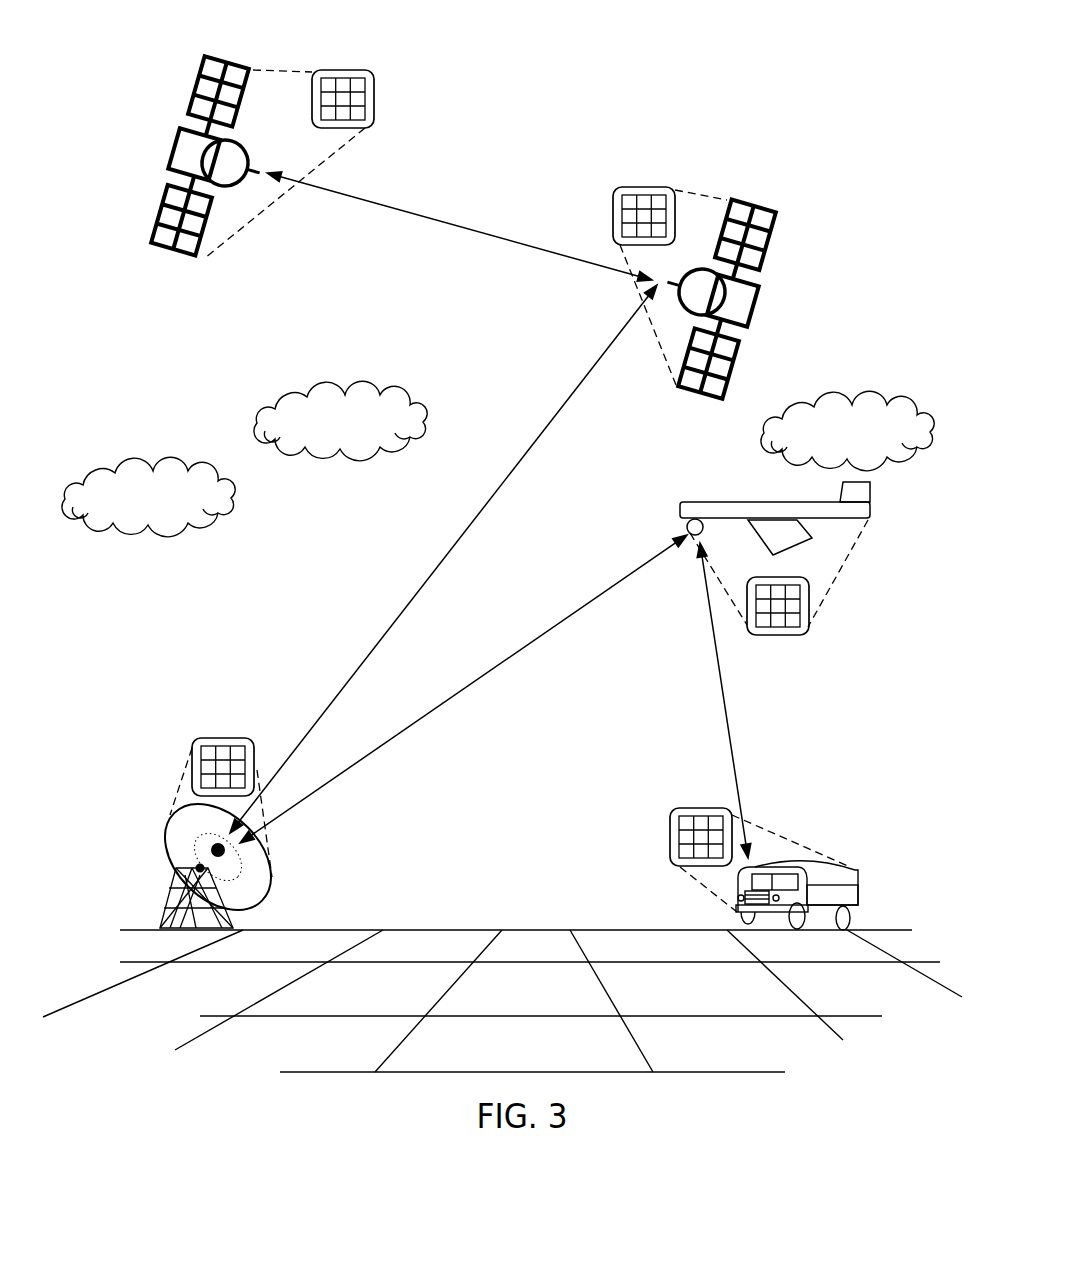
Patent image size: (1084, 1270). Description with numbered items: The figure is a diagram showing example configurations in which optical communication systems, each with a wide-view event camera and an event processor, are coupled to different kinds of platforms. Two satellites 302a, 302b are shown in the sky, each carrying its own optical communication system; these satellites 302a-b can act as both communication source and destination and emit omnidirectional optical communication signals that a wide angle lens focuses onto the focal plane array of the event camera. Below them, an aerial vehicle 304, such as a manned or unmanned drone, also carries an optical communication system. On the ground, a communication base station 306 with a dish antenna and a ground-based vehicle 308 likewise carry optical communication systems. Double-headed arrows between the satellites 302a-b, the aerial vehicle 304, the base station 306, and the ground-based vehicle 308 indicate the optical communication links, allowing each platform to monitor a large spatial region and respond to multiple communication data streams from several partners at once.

The satellite 302a is at (176, 150).
The satellite 302b is at (760, 292).
The aerial vehicle 304 is at (710, 504).
The communication base station 306 is at (175, 905).
The ground-based vehicle 308 is at (850, 873).